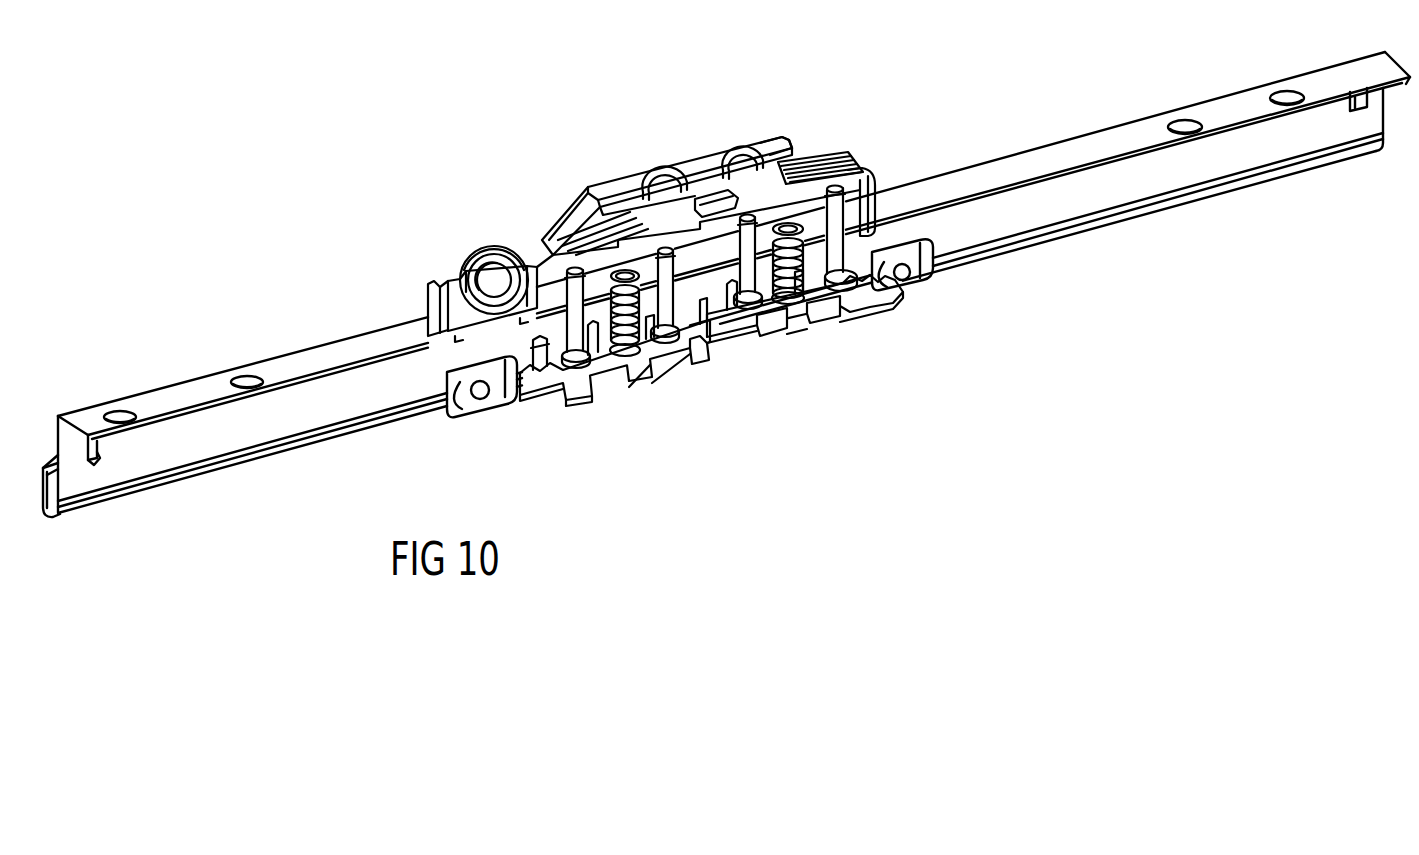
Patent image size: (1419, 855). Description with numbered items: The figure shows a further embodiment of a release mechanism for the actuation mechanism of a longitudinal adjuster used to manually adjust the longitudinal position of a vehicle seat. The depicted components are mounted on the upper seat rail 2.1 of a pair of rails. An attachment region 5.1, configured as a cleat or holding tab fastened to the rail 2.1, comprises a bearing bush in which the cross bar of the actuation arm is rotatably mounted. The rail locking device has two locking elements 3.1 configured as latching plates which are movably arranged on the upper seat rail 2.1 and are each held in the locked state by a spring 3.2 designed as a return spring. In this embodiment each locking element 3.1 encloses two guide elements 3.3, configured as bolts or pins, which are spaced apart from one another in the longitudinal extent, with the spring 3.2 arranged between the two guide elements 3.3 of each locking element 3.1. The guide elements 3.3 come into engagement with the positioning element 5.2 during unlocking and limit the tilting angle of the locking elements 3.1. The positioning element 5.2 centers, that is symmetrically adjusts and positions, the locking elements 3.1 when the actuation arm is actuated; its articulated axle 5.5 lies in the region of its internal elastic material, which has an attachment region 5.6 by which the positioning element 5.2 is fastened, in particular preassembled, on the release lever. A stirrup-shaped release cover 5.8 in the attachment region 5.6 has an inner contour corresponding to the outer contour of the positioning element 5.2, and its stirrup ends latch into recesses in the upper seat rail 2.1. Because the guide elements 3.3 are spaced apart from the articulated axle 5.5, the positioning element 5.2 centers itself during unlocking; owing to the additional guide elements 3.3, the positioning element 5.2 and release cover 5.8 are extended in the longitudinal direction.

The upper seat rail 2.1 is at (1122, 135).
The locking element 3.1 is at (570, 372).
The spring 3.2 is at (628, 353).
The guide element 3.3 is at (580, 360).
The attachment region 5.1 is at (424, 251).
The positioning element 5.2 is at (817, 180).
The articulated axle 5.5 is at (716, 204).
The attachment region 5.6 is at (690, 158).
The release cover 5.8 is at (768, 140).